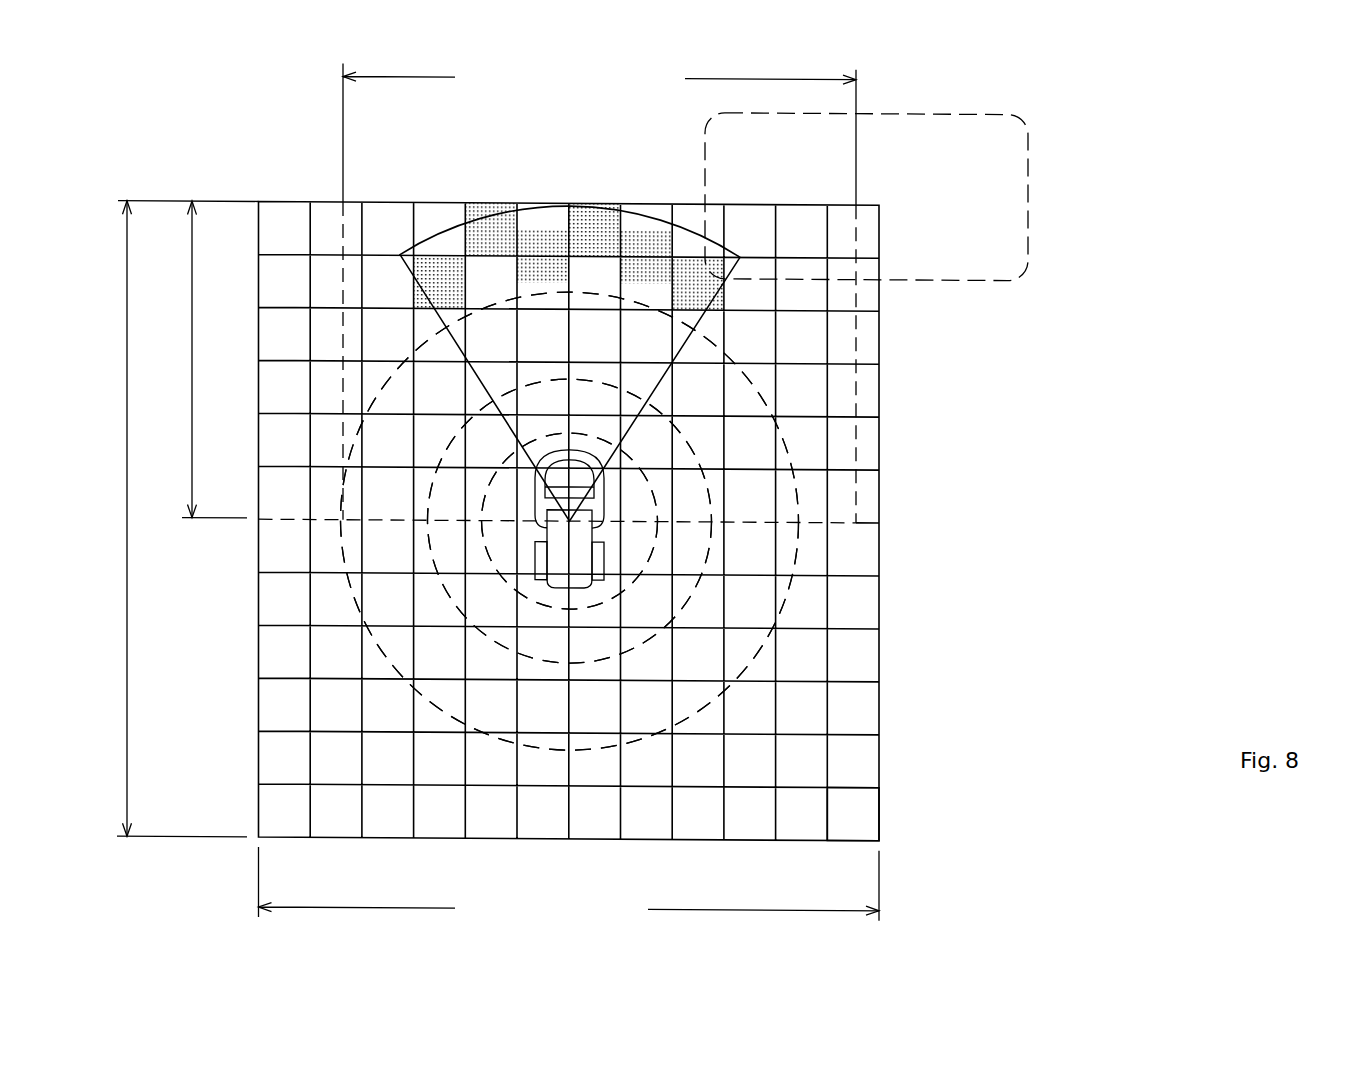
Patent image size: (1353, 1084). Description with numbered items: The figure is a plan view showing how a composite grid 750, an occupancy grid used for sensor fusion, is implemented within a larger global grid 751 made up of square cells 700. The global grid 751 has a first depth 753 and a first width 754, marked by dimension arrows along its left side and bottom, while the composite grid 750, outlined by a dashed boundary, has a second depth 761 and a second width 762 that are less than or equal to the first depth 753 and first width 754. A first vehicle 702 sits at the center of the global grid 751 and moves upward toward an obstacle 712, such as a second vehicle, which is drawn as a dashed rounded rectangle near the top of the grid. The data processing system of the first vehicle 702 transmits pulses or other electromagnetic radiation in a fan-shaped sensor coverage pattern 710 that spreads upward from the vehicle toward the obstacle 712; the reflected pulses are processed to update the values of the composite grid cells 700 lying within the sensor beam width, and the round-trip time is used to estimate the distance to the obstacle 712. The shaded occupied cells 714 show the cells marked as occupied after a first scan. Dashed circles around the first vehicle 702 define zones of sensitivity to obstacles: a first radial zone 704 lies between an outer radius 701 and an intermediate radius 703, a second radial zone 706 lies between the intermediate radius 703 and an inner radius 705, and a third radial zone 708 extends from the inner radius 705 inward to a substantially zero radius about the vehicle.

The composite grid cells 700 is at (866, 805).
The outer radius 701 is at (753, 658).
The first vehicle 702 is at (587, 554).
The intermediate radius 703 is at (700, 590).
The first radial zone 704 is at (737, 403).
The inner radius 705 is at (555, 607).
The second radial zone 706 is at (682, 457).
The third radial zone 708 is at (627, 498).
The sensor coverage pattern 710 is at (720, 352).
The obstacle 712 is at (1028, 186).
The occupied cells 714 is at (455, 195).
The composite grid 750 is at (380, 205).
The global grid 751 is at (900, 821).
The first depth 753 is at (170, 519).
The first width 754 is at (569, 884).
The second depth 761 is at (188, 359).
The second width 762 is at (599, 135).